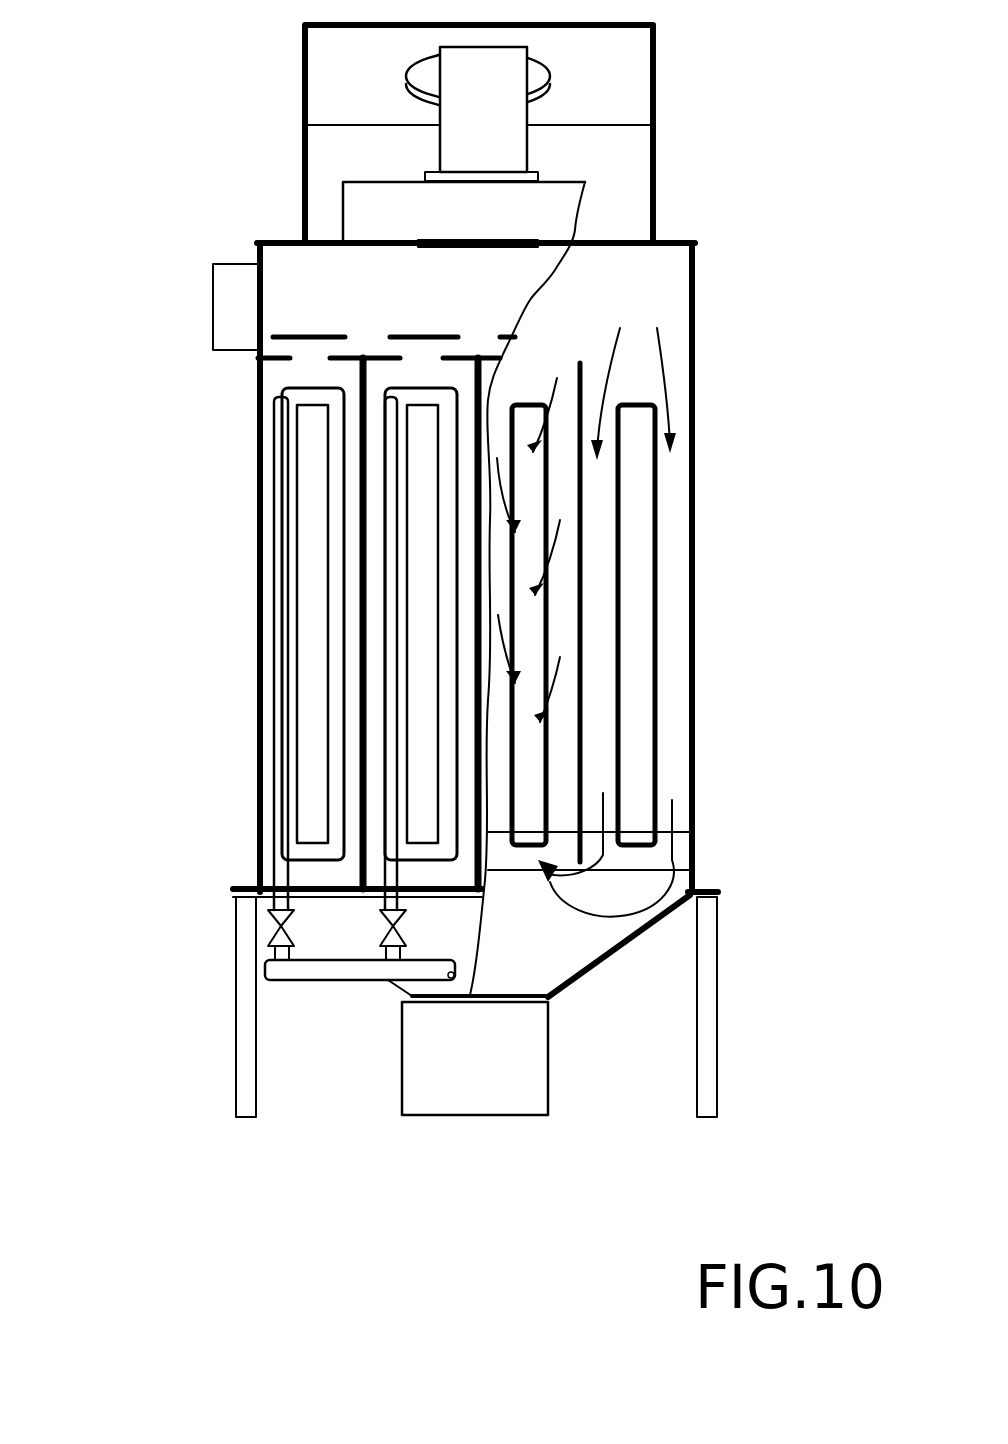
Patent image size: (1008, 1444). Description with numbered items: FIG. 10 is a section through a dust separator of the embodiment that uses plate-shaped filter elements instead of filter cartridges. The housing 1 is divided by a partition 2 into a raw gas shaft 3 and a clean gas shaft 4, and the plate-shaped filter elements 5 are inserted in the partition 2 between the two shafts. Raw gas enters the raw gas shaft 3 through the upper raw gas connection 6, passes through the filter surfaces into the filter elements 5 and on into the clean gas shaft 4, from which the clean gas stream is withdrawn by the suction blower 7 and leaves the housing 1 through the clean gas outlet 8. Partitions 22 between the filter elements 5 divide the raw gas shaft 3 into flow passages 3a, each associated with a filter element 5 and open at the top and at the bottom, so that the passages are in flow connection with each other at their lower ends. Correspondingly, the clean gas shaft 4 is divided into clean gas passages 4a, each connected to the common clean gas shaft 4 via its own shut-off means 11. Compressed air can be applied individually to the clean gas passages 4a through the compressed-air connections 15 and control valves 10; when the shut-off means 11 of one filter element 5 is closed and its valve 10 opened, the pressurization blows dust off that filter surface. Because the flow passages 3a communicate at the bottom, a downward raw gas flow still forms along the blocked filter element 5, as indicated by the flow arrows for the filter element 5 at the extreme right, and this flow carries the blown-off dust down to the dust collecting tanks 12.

The housing 1 is at (696, 388).
The partition 2 is at (263, 556).
The raw gas shaft 3 is at (642, 282).
The flow passage 3a is at (563, 515).
The clean gas shaft 4 is at (293, 262).
The clean gas passage 4a is at (377, 467).
The filter element 5 is at (408, 658).
The raw gas connection 6 is at (228, 297).
The suction blower 7 is at (383, 205).
The clean gas outlet 8 is at (535, 77).
The valve 10 is at (355, 960).
The shut-off means 11 is at (386, 306).
The dust collecting tank 12 is at (505, 1085).
The compressed-air connection 15 is at (393, 693).
The partition 22 is at (585, 762).